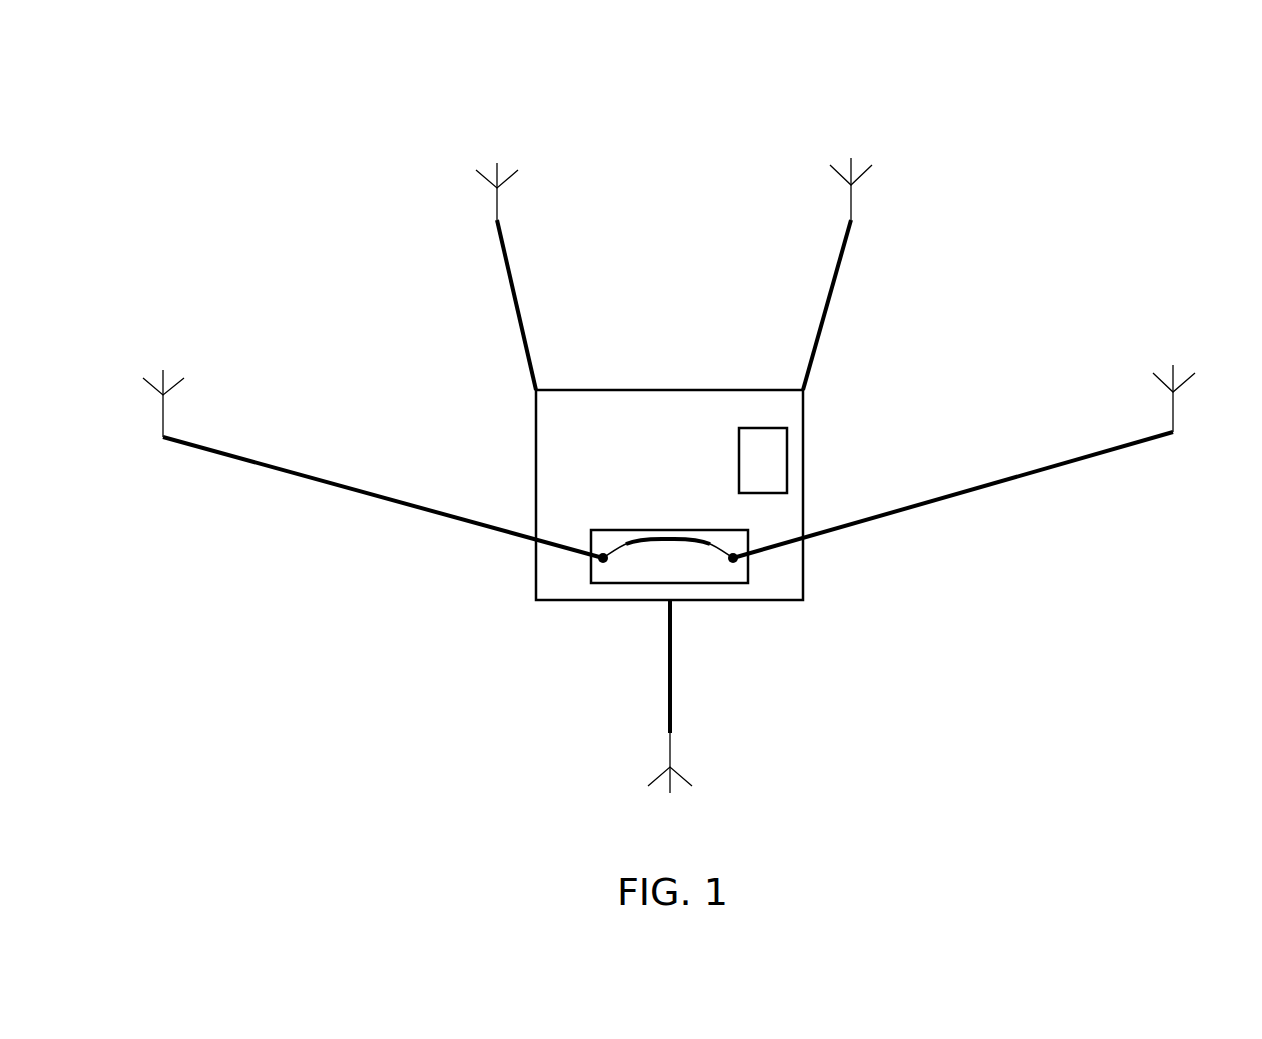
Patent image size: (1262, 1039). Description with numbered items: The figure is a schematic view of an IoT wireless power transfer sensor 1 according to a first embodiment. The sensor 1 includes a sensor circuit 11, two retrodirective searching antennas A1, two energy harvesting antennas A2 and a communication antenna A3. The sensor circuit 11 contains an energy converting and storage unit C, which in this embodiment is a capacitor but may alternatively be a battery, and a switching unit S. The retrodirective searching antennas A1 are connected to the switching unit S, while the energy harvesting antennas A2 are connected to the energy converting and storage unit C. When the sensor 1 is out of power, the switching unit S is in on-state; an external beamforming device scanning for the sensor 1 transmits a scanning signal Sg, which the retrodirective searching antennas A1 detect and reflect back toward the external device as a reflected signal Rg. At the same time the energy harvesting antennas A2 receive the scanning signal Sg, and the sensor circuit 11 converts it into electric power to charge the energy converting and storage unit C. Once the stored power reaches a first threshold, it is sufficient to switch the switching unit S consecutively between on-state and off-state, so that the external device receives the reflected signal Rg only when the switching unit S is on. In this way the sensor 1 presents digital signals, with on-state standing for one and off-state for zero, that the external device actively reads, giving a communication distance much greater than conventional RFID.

The IoT wireless power transfer sensor 1 is at (170, 111).
The sensor circuit 11 is at (697, 390).
The energy converting and storage unit C is at (787, 457).
The switching unit S is at (665, 530).
The retrodirective searching antenna A1 is at (163, 412).
The energy harvesting antenna A2 is at (497, 207).
The communication antenna A3 is at (668, 745).
The scanning signal Sg is at (497, 140).
The reflected signal Rg is at (190, 350).